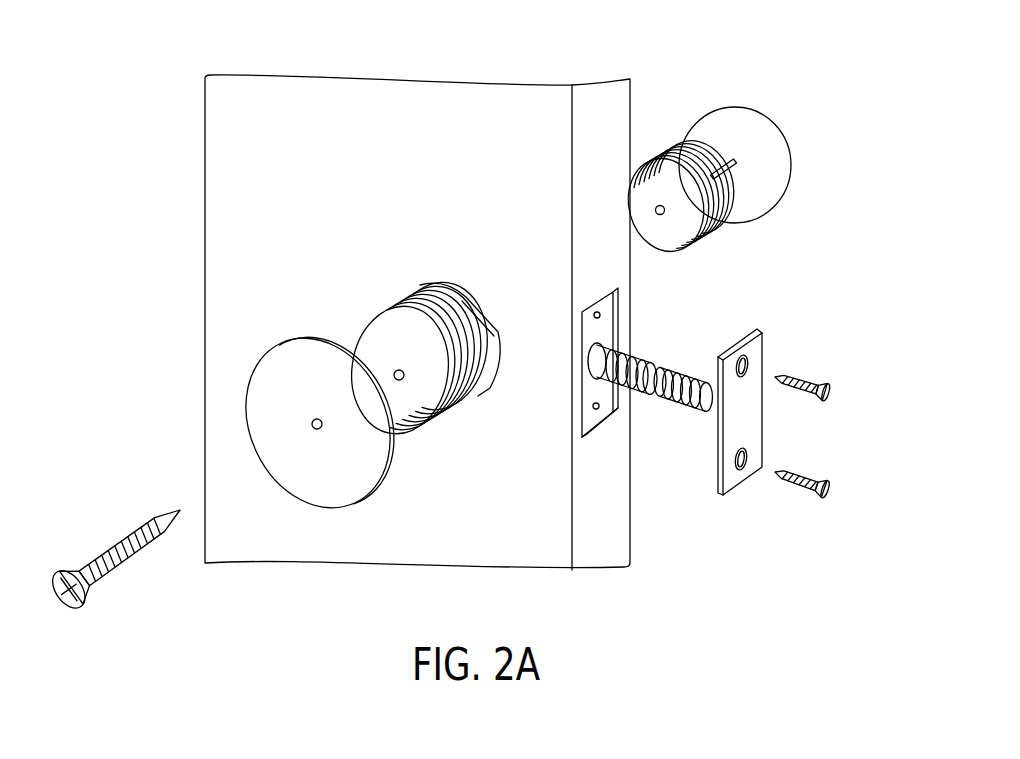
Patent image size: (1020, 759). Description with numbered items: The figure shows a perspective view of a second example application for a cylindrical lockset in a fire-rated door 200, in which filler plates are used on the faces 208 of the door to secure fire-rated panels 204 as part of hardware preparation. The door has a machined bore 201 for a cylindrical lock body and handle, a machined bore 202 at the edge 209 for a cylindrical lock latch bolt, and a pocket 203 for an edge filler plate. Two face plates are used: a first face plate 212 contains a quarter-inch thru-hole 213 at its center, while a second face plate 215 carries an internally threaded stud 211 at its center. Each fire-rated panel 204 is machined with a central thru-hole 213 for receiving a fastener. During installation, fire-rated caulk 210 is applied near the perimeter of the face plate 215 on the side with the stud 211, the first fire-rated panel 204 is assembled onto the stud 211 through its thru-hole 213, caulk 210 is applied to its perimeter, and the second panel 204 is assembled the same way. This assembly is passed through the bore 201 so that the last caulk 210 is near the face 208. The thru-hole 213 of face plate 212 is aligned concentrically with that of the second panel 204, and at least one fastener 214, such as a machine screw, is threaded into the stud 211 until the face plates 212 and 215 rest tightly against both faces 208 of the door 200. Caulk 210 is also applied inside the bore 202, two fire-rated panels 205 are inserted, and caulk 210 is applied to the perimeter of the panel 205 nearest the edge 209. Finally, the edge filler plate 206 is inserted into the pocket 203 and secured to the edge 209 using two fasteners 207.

The fire-rated door 200 is at (388, 290).
The machined bore for a cylindrical lock body and handle 201 is at (453, 302).
The machined bore for a cylindrical lock latch bolt 202 is at (603, 331).
The pocket for the edge filler plate 203 is at (617, 308).
The fire-rated panel 204 is at (387, 352).
The fire-rated panel 205 is at (638, 395).
The edge filler plate 206 is at (765, 352).
The fastener 207 is at (826, 396).
The face 208 is at (412, 96).
The edge 209 is at (594, 99).
The fire-rated caulk 210 is at (360, 343).
The internally threaded stud 211 is at (723, 157).
The first face plate 212 is at (275, 443).
The thru-hole 213 is at (314, 418).
The fastener 214 is at (106, 580).
The second face plate 215 is at (783, 178).